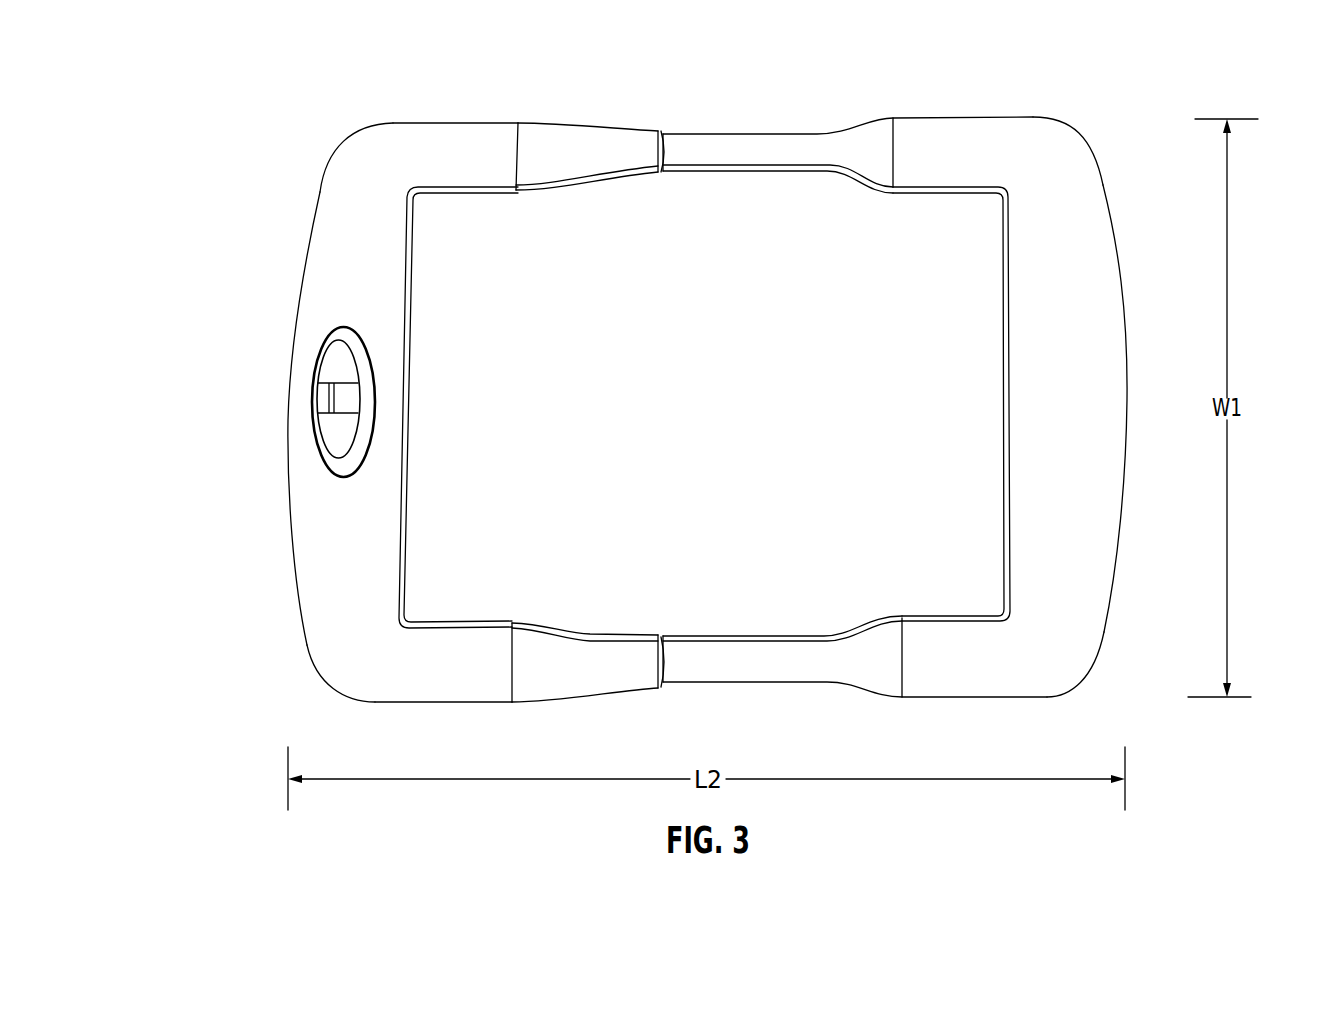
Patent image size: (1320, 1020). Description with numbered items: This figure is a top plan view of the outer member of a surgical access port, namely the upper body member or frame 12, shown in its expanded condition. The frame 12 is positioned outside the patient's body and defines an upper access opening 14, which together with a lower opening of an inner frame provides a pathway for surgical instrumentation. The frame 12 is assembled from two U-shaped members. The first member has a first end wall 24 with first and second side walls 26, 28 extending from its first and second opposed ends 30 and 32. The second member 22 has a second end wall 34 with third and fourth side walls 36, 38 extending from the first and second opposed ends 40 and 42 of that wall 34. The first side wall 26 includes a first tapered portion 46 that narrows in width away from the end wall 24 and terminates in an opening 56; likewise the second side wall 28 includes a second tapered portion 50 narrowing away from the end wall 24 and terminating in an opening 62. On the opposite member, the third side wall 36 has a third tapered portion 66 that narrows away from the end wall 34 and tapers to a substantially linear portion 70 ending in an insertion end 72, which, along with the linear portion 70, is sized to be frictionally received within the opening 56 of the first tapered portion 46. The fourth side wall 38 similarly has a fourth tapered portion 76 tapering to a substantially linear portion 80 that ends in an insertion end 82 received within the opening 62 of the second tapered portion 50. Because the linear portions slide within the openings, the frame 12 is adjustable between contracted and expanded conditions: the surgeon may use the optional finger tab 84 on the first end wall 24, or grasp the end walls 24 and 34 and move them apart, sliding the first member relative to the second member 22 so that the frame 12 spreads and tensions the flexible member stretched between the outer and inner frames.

The upper body member or frame 12 is at (229, 136).
The upper access opening 14 is at (923, 504).
The second member 22 is at (1137, 325).
The first end wall 24 is at (292, 380).
The first side wall 26 is at (499, 114).
The second side wall 28 is at (413, 720).
The first end of first end wall 30 is at (347, 157).
The second end of first end wall 32 is at (327, 657).
The second end wall 34 is at (1131, 411).
The third side wall 36 is at (817, 121).
The fourth side wall 38 is at (823, 696).
The first end of second end wall 40 is at (1081, 148).
The second end of second end wall 42 is at (1097, 659).
The first tapered portion 46 is at (597, 123).
The second tapered portion 50 is at (580, 626).
The opening of first tapered portion 56 is at (664, 142).
The opening of second tapered portion 62 is at (660, 652).
The third tapered portion 66 is at (813, 180).
The substantially linear portion 70 is at (750, 172).
The insertion end 72 is at (677, 158).
The fourth tapered portion 76 is at (804, 626).
The substantially linear portion 80 is at (762, 683).
The insertion end 82 is at (664, 688).
The finger tab 84 is at (320, 405).